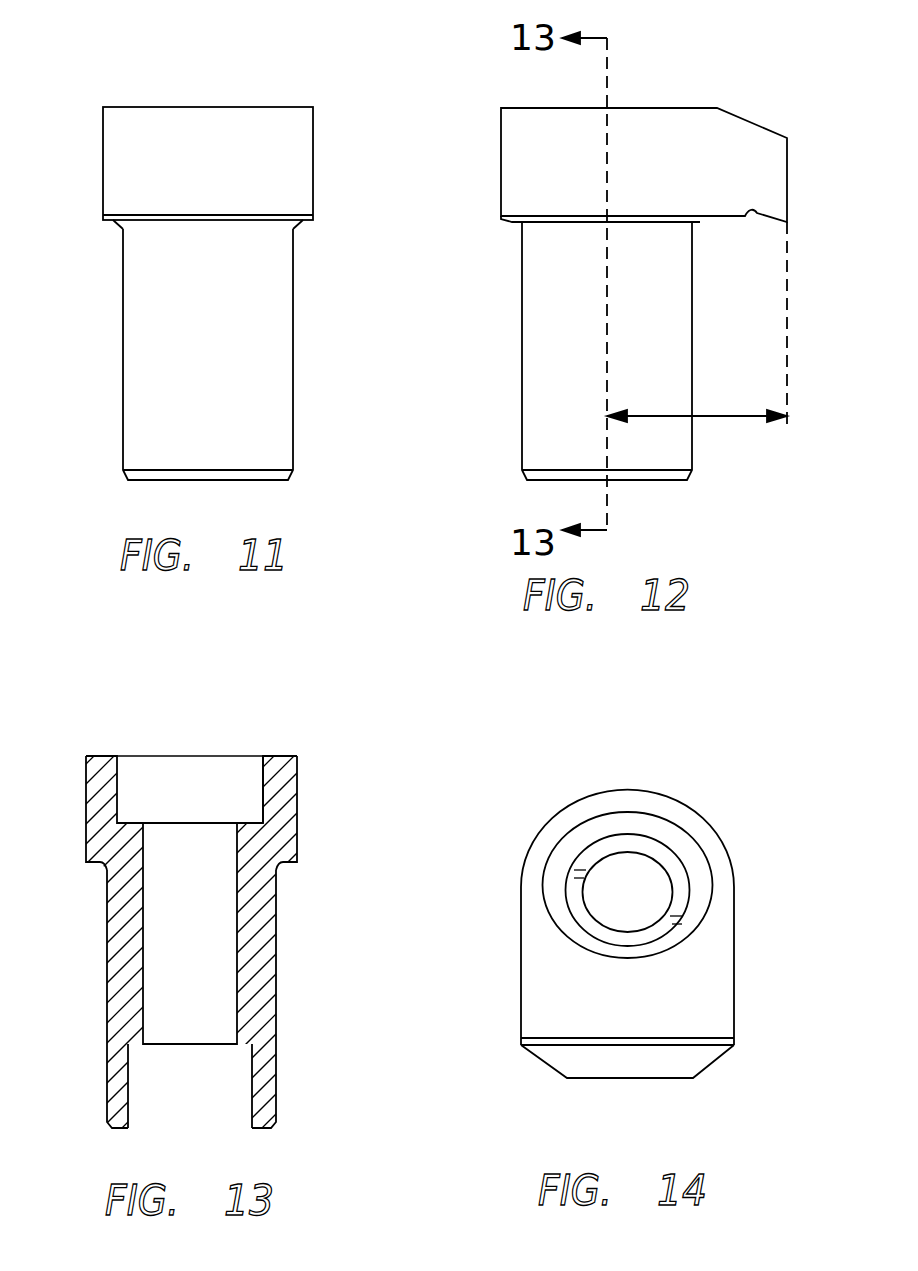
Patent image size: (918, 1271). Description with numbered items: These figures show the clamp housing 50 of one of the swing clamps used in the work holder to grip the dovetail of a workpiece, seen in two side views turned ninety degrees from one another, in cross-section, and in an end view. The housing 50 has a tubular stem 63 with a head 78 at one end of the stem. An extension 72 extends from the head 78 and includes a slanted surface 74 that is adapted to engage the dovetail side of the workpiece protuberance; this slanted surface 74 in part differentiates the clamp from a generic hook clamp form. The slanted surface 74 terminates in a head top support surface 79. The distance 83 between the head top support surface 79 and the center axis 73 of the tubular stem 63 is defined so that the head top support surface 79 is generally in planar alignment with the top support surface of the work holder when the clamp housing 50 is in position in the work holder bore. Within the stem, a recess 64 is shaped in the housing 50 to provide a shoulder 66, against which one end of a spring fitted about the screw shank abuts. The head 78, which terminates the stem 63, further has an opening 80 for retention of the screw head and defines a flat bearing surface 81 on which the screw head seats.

In FIG. 11, the clamp housing 50 is at (110, 62).
In FIG. 12, the clamp housing 50 is at (500, 82).
In FIG. 13, the clamp housing 50 is at (310, 727).
In FIG. 14, the clamp housing 50 is at (720, 783).
In FIG. 11, the tubular stem 63 is at (298, 345).
In FIG. 12, the tubular stem 63 is at (695, 347).
In FIG. 13, the tubular stem 63 is at (280, 994).
In FIG. 13, the recess 64 is at (143, 936).
In FIG. 14, the recess 64 is at (668, 893).
In FIG. 13, the shoulder 66 is at (135, 1047).
In FIG. 12, the extension 72 is at (752, 122).
In FIG. 14, the extension 72 is at (636, 1053).
In FIG. 12, the center axis 73 is at (607, 322).
In FIG. 12, the slanted surface 74 is at (757, 215).
In FIG. 11, the head 78 is at (238, 107).
In FIG. 12, the head 78 is at (600, 178).
In FIG. 13, the head 78 is at (86, 792).
In FIG. 14, the head 78 is at (725, 1012).
In FIG. 12, the head top support surface 79 is at (788, 168).
In FIG. 13, the opening 80 is at (117, 786).
In FIG. 14, the opening 80 is at (566, 932).
In FIG. 13, the flat bearing surface 81 is at (253, 830).
In FIG. 12, the distance 83 is at (720, 417).